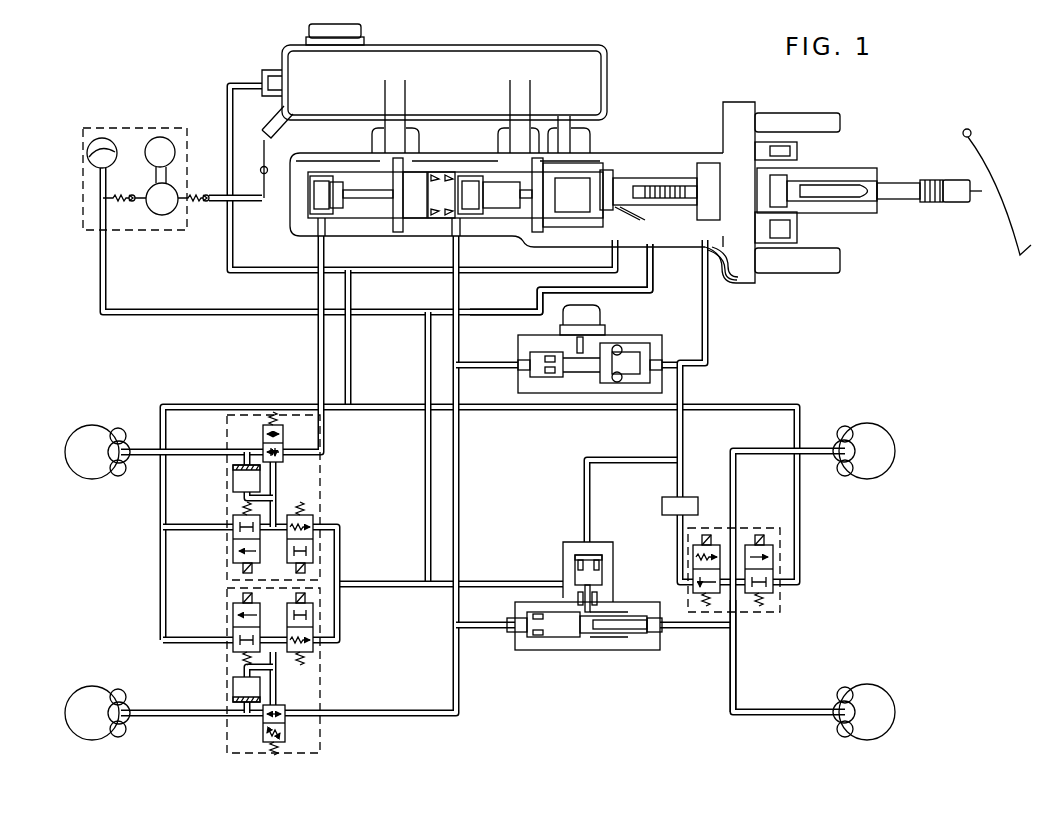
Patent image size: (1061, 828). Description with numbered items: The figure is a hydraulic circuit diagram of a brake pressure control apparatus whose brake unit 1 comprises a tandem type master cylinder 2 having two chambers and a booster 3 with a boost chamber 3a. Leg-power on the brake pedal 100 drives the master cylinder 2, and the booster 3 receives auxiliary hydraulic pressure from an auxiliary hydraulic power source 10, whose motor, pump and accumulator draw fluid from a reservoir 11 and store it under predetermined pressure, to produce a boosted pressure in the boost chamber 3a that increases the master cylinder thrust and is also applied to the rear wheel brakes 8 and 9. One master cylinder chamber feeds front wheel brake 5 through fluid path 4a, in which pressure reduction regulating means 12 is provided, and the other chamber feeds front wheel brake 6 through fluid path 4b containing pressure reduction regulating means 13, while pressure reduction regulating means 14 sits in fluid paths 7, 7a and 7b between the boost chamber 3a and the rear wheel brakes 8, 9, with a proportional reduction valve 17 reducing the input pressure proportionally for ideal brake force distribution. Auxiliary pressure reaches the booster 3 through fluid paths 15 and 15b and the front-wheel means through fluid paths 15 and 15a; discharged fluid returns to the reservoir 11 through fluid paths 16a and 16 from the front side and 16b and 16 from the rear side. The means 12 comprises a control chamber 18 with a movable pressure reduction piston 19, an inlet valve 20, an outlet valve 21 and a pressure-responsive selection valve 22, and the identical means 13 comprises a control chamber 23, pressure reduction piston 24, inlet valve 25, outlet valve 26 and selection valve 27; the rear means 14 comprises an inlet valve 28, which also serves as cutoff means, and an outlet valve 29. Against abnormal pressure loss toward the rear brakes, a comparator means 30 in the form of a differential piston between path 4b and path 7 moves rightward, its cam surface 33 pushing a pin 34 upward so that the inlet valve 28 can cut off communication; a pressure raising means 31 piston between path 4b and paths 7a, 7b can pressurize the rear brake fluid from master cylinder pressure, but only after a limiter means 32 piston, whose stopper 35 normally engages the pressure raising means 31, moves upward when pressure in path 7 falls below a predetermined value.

The brake unit 1 is at (668, 100).
The master cylinder 2 is at (360, 243).
The booster 3 is at (668, 140).
The boost chamber 3a is at (724, 250).
The fluid path 4a is at (318, 370).
The fluid path 4b is at (458, 468).
The front wheel brake 5 is at (122, 452).
The front wheel brake 6 is at (122, 712).
The fluid path 7 is at (683, 432).
The fluid path 7a is at (768, 451).
The fluid path 7b is at (758, 712).
The rear wheel brake 8 is at (840, 440).
The rear wheel brake 9 is at (840, 706).
The auxiliary hydraulic power source 10 is at (105, 128).
The reservoir 11 is at (455, 45).
The pressure reduction regulating means 12 is at (320, 475).
The pressure reduction regulating means 13 is at (322, 675).
The pressure reduction regulating means 14 is at (782, 600).
The fluid path 15 is at (375, 311).
The fluid path 15a is at (428, 462).
The fluid path 15b is at (481, 311).
The fluid path 16 is at (352, 365).
The fluid path 16a is at (163, 500).
The fluid path 16b is at (560, 408).
The proportional reduction valve 17 is at (688, 497).
The control chamber 18 is at (236, 486).
The pressure reduction piston 19 is at (235, 470).
The inlet valve 20 is at (313, 520).
The outlet valve 21 is at (233, 520).
The pressure-responsive selection valve 22 is at (262, 424).
The control chamber 23 is at (235, 678).
The pressure reduction piston 24 is at (235, 687).
The inlet valve 25 is at (313, 640).
The outlet valve 26 is at (233, 600).
The pressure-responsive selection valve 27 is at (287, 735).
The inlet valve 28 is at (693, 560).
The outlet valve 29 is at (762, 545).
The comparator means 30 is at (603, 360).
The pressure raising means 31 is at (560, 625).
The limiter means 32 is at (580, 578).
The cam surface 33 is at (605, 352).
The pin 34 is at (577, 347).
The stopper 35 is at (598, 605).
The brake pedal 100 is at (998, 205).